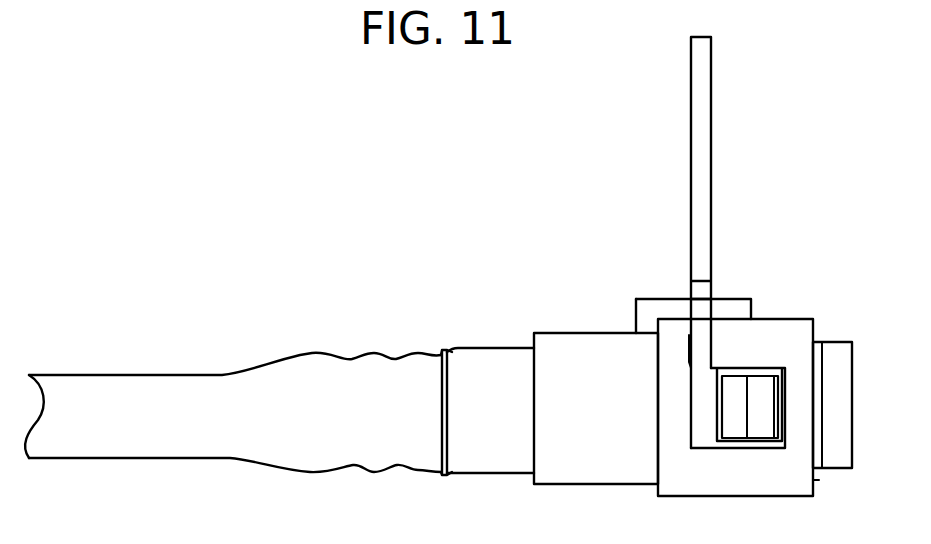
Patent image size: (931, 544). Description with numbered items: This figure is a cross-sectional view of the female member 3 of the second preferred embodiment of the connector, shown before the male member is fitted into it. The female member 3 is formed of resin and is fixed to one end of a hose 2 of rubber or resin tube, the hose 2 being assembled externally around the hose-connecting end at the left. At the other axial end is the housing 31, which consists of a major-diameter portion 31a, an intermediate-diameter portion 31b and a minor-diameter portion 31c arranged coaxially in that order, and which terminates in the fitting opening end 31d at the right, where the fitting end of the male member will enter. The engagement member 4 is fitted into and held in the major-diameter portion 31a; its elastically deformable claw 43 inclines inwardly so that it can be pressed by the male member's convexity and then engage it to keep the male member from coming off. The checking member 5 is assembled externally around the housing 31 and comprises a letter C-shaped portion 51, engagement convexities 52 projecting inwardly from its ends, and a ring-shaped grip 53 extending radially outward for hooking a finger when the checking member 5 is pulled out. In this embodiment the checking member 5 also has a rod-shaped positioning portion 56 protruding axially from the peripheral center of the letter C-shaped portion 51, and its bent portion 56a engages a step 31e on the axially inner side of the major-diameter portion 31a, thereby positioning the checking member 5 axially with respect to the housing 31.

The hose 2 is at (308, 357).
The female member 3 is at (608, 339).
The engagement member 4 is at (836, 336).
The checking member 5 is at (711, 288).
The housing 31 is at (675, 339).
The major-diameter portion 31a is at (778, 333).
The intermediate-diameter portion 31b is at (534, 333).
The minor-diameter portion 31c is at (463, 358).
The fitting opening end 31d is at (819, 480).
The step 31e is at (642, 325).
The claw 43 is at (763, 428).
The letter C-shaped portion 51 is at (692, 335).
The engagement convexity 52 is at (706, 430).
The ring-shaped grip 53 is at (711, 110).
The positioning portion 56 is at (635, 280).
The bent portion 56a is at (581, 287).